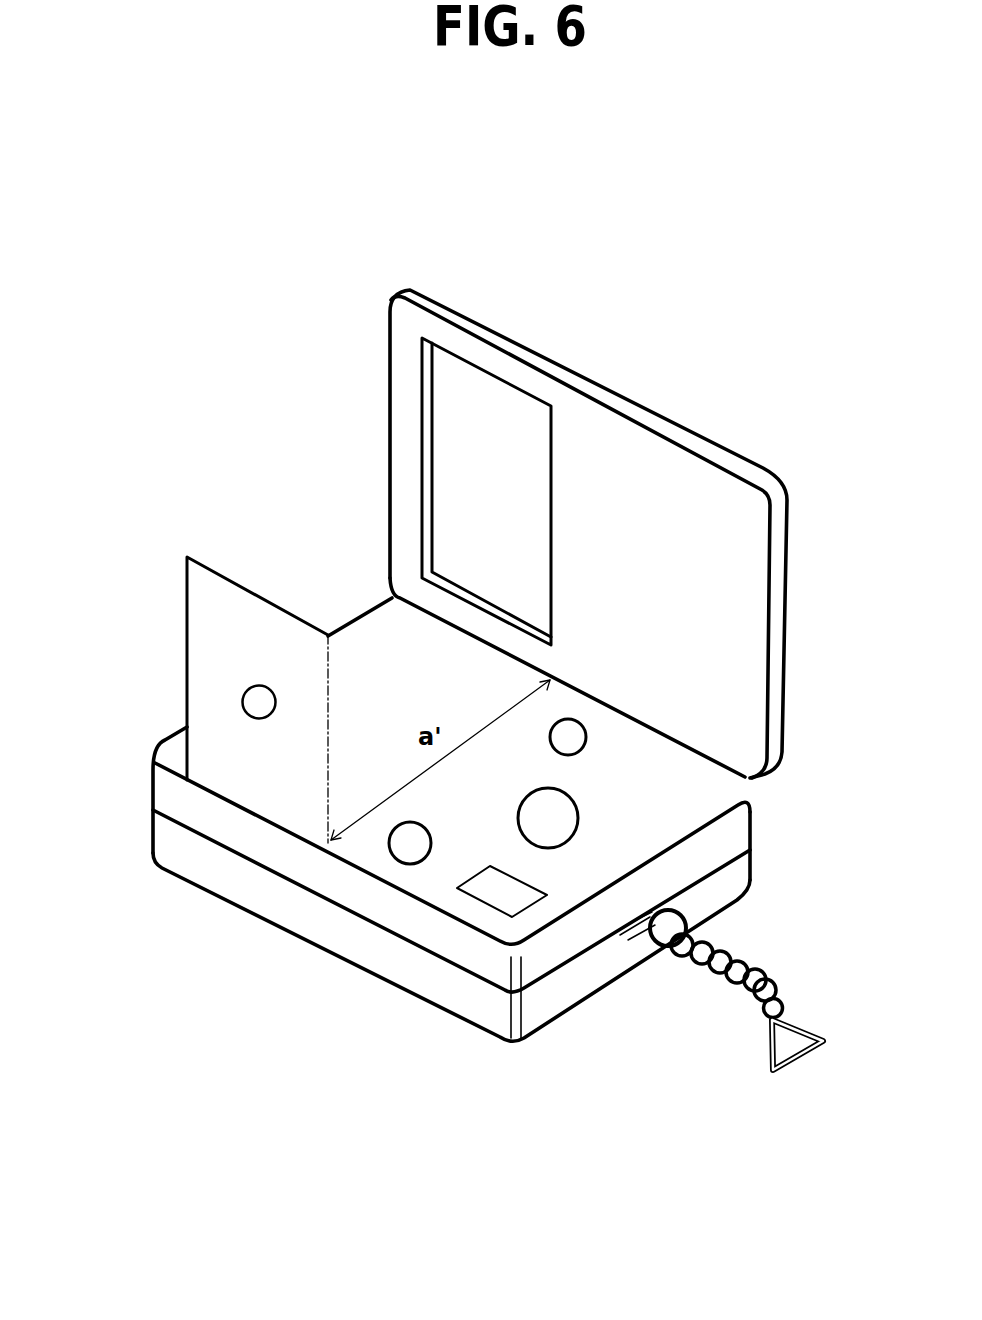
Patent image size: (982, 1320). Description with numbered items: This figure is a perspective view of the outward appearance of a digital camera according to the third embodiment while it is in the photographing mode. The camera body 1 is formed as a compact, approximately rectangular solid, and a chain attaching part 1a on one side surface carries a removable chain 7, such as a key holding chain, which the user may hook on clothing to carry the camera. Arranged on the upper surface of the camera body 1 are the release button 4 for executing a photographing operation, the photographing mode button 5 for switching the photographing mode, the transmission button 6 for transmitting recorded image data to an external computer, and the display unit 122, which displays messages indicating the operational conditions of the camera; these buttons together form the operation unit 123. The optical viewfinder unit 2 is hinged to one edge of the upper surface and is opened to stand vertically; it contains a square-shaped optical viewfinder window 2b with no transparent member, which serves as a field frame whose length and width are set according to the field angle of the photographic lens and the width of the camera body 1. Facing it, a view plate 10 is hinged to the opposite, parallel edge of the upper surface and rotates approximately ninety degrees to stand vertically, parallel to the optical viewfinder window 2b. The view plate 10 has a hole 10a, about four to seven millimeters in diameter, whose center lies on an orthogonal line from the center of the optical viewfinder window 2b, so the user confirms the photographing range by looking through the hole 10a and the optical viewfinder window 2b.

The camera body 1 is at (578, 1012).
The chain attaching part 1a is at (625, 950).
The optical viewfinder unit 2 is at (760, 470).
The optical viewfinder window 2b is at (452, 382).
The release button 4 is at (560, 823).
The photographing mode button 5 is at (407, 849).
The transmission button 6 is at (572, 736).
The chain 7 is at (727, 942).
The view plate 10 is at (186, 600).
The hole 10a is at (268, 716).
The display unit 122 is at (520, 880).
The operation unit 123 is at (594, 777).